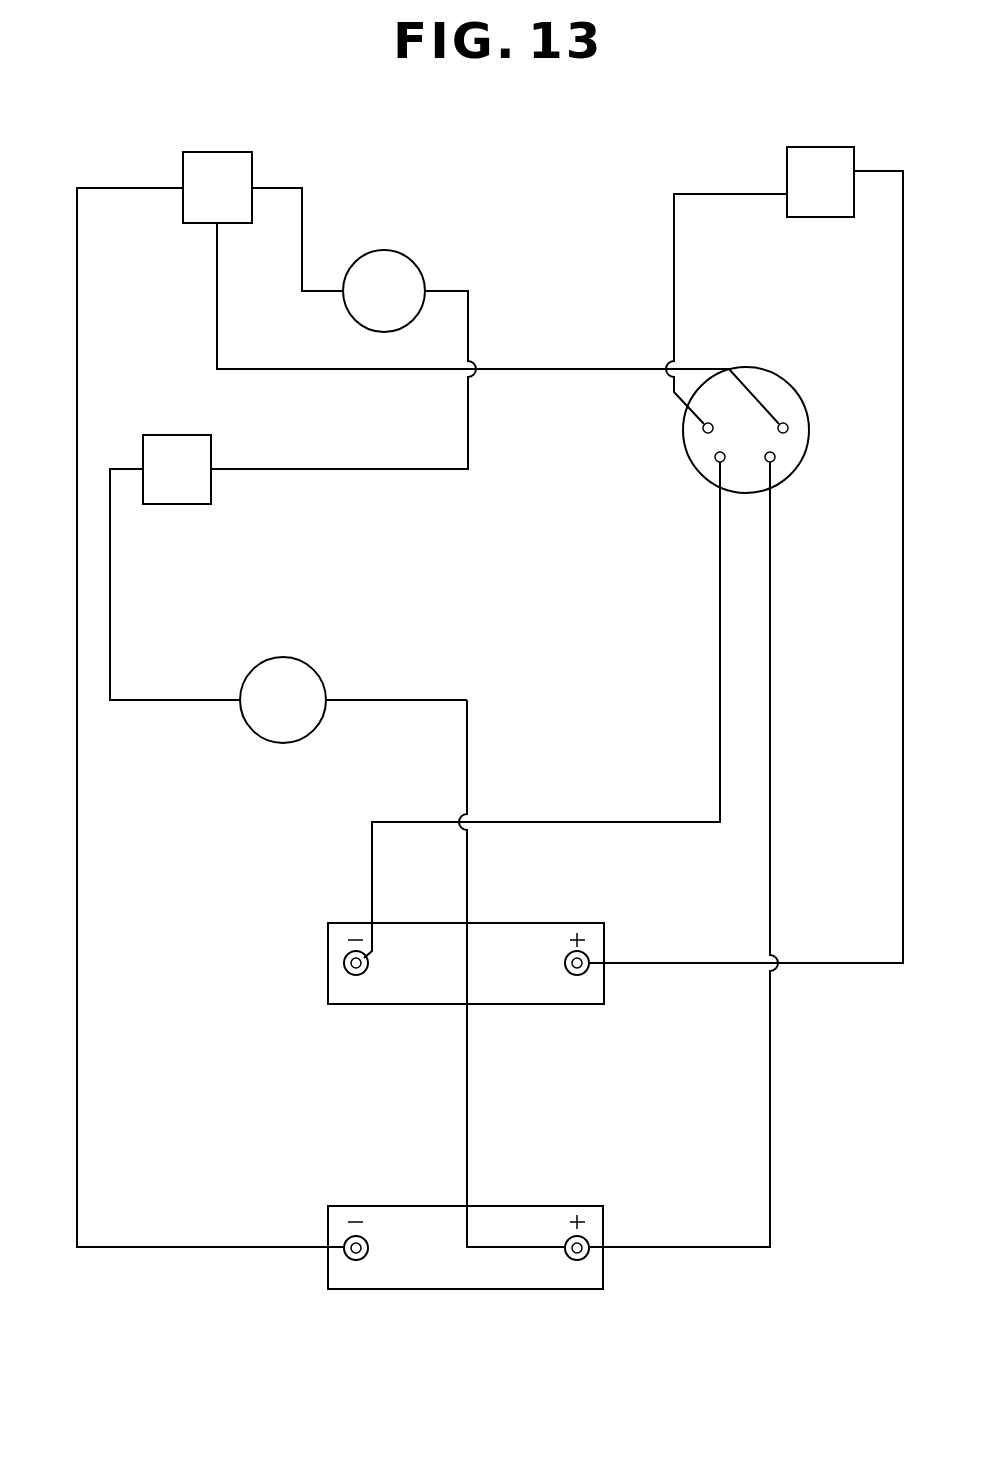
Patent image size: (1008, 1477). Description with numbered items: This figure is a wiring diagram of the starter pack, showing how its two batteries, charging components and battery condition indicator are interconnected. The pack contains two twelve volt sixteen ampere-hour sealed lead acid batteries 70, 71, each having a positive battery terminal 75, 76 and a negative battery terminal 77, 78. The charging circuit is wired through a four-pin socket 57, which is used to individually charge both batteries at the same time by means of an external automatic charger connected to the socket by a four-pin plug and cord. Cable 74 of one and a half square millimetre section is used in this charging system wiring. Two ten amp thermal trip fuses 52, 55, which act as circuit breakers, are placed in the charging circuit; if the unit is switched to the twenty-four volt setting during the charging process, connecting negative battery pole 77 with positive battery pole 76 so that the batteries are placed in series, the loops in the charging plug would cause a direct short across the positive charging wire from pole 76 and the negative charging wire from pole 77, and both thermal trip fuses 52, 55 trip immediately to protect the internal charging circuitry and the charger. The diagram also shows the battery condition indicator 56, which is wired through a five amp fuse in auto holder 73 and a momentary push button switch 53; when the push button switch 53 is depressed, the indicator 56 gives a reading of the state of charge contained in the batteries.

The thermal trip fuse 52 is at (217, 151).
The momentary push button switch 53 is at (179, 505).
The thermal trip fuse 55 is at (823, 147).
The battery condition indicator 56 is at (385, 249).
The 4-pin socket 57 is at (780, 388).
The sealed lead acid battery 70 is at (518, 942).
The sealed lead acid battery 71 is at (517, 1225).
The fuse in auto holder 73 is at (287, 657).
The cable 74 is at (397, 698).
The positive battery terminal 75 is at (579, 977).
The positive battery terminal 76 is at (579, 1261).
The negative battery terminal 77 is at (360, 977).
The negative battery terminal 78 is at (360, 1261).